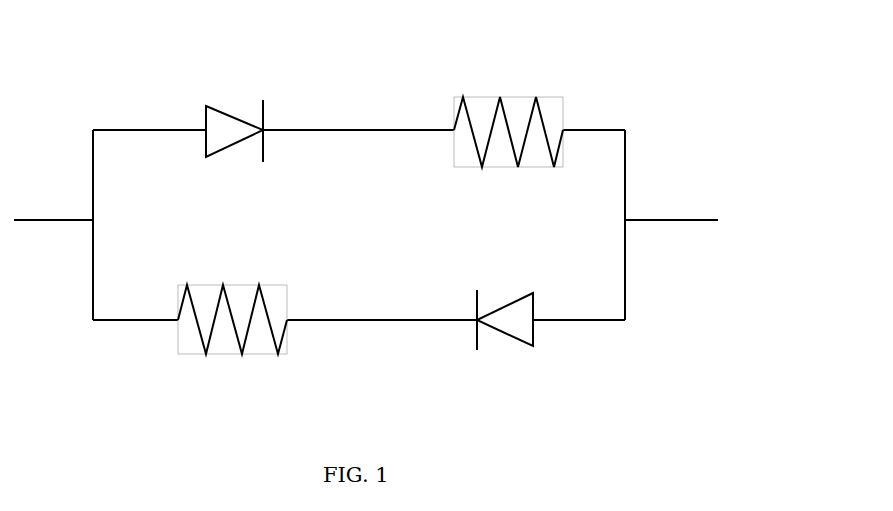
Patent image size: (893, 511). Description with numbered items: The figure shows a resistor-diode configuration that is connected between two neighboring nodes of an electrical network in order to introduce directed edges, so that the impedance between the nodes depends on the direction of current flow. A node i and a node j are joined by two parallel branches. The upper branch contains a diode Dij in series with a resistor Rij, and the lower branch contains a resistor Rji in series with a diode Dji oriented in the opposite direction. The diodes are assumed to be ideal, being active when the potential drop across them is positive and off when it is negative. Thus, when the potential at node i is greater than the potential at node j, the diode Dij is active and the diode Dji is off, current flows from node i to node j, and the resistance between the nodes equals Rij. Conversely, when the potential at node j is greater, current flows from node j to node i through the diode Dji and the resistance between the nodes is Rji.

The node i is at (53, 204).
The node j is at (671, 204).
The diode Dij is at (234, 107).
The resistor Rij is at (508, 105).
The resistor Rji is at (232, 345).
The diode Dji is at (505, 345).